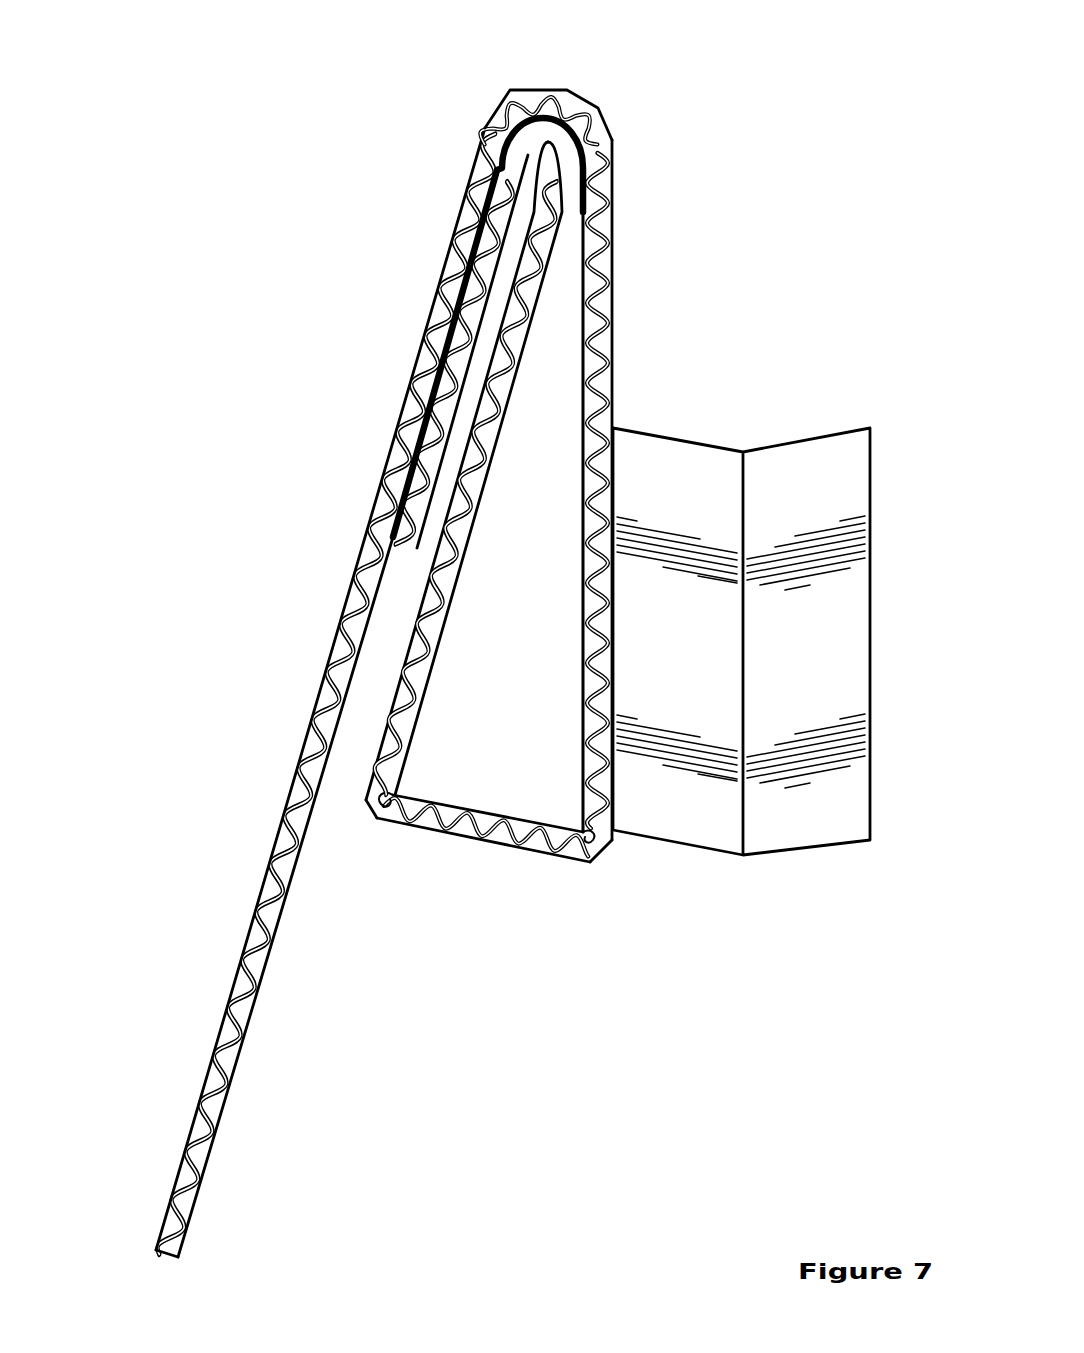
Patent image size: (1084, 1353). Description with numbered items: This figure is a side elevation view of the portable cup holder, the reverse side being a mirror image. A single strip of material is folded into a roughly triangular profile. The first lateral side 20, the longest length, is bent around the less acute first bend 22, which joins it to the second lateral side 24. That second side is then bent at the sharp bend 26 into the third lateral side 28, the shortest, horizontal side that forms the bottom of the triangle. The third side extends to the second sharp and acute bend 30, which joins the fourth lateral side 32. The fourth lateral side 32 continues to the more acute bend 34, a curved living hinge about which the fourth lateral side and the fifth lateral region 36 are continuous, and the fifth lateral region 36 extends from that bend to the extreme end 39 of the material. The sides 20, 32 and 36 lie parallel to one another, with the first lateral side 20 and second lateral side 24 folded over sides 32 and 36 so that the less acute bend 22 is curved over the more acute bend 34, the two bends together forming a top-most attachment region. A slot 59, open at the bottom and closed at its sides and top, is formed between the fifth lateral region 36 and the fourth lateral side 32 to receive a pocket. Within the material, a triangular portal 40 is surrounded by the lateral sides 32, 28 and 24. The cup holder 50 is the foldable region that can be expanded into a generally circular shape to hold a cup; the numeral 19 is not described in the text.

The lower end of display strip 19 is at (165, 1240).
The first lateral side 20 is at (290, 792).
The first bend 22 is at (542, 80).
The second lateral side 24 is at (616, 238).
The sharp bend 26 is at (597, 838).
The third lateral side 28 is at (469, 827).
The second sharp and acute bend 30 is at (376, 818).
The fourth lateral side 32 is at (482, 430).
The curved living hinge 34 is at (525, 144).
The fifth lateral region 36 is at (462, 350).
The extreme end 39 is at (397, 540).
The triangular portal 40 is at (510, 725).
The cup holder 50 is at (800, 465).
The slot 59 is at (400, 611).